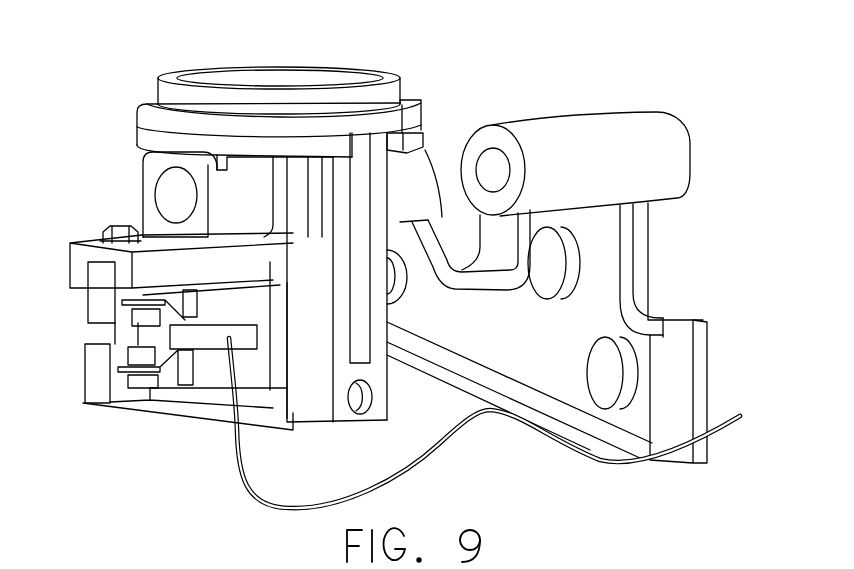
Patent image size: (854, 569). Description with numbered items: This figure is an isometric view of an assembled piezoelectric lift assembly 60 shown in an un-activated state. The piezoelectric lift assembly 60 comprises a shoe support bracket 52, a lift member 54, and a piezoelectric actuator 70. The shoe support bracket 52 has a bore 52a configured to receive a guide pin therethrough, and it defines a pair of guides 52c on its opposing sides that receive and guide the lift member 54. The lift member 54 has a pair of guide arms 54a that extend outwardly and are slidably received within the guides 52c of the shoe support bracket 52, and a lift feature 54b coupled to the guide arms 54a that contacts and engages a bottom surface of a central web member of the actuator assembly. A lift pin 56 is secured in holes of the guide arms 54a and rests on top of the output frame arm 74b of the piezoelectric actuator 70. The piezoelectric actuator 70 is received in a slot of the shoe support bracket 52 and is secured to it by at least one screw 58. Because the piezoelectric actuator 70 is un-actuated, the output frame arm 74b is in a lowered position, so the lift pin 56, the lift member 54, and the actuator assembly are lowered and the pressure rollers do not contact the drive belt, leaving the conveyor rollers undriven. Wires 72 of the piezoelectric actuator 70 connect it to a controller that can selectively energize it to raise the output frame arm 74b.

The shoe support bracket 52 is at (618, 125).
The bore 52a is at (165, 188).
The guides 52c is at (390, 135).
The lift member 54 is at (397, 93).
The guide arms 54a is at (307, 393).
The lift feature 54b is at (313, 67).
The lift pin 56 is at (360, 397).
The screw 58 is at (118, 225).
The piezoelectric lift assembly 60 is at (117, 482).
The piezoelectric actuator 70 is at (90, 417).
The wires 72 is at (683, 460).
The output frame arm 74b is at (180, 405).